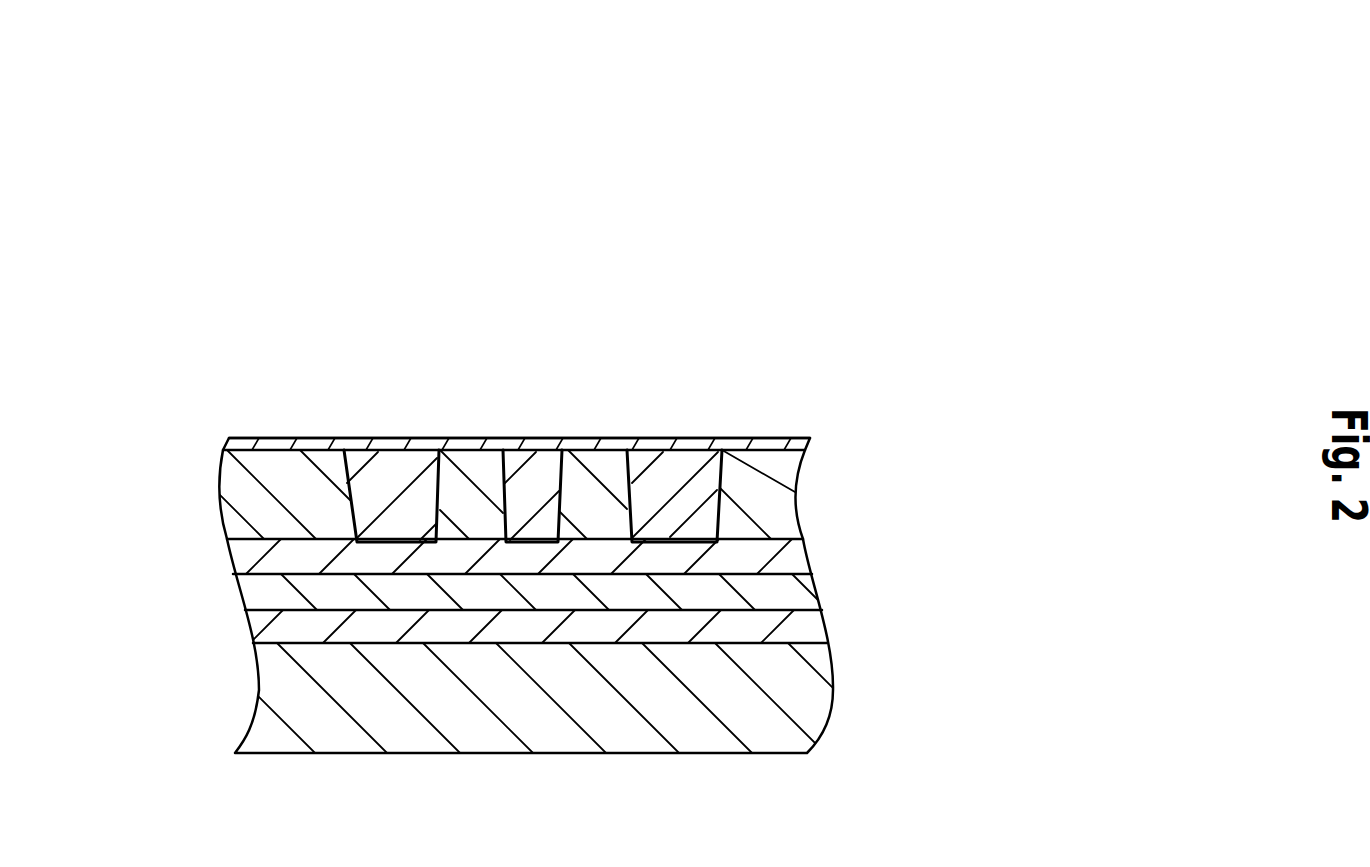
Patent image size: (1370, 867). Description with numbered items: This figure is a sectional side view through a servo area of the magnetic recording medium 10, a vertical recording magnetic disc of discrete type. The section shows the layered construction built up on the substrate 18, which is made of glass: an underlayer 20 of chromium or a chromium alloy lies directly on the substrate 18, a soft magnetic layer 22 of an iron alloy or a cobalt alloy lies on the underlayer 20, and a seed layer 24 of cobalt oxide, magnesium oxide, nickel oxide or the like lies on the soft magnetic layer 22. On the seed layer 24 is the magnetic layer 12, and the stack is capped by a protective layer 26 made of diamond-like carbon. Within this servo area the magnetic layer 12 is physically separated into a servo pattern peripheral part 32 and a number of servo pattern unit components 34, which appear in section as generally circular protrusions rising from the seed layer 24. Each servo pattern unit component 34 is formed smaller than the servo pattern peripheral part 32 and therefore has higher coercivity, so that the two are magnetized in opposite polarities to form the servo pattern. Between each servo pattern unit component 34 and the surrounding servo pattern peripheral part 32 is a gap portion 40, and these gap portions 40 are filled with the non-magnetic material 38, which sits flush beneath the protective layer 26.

The magnetic recording medium 10 is at (523, 121).
The magnetic layer 12 is at (848, 499).
The substrate 18 is at (833, 692).
The underlayer 20 is at (827, 627).
The soft magnetic layer 22 is at (818, 590).
The seed layer 24 is at (807, 550).
The protective layer 26 is at (268, 433).
The servo pattern peripheral part 32 is at (235, 498).
The servo pattern unit component 34 is at (477, 462).
The non-magnetic material 38 is at (427, 462).
The gap portion 40 is at (440, 411).